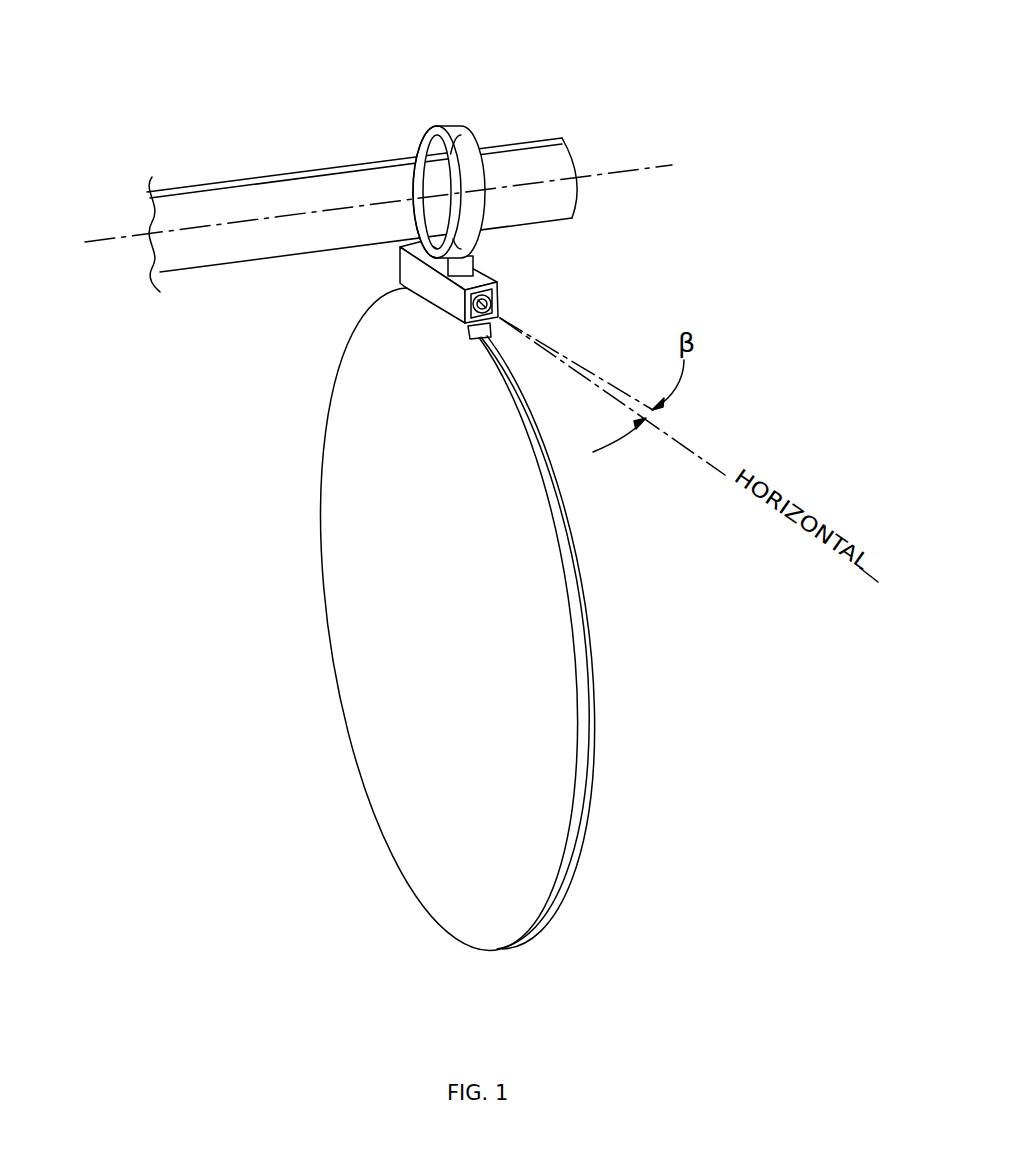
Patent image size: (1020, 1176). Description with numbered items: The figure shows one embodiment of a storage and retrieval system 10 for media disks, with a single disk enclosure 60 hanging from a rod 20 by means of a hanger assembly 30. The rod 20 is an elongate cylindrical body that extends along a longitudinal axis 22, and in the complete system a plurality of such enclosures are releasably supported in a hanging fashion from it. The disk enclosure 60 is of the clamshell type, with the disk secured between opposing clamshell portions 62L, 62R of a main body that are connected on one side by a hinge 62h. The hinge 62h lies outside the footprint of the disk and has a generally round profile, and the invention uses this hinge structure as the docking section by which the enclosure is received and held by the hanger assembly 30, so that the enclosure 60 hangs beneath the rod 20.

The storage and retrieval system 10 is at (253, 68).
The rod 20 is at (205, 205).
The longitudinal axis 22 is at (623, 167).
The hanger assembly 30 is at (554, 262).
The hinge 62h is at (497, 298).
The disk enclosure 60 is at (510, 720).
The clamshell portion 62R is at (580, 578).
The clamshell portion 62L is at (573, 613).